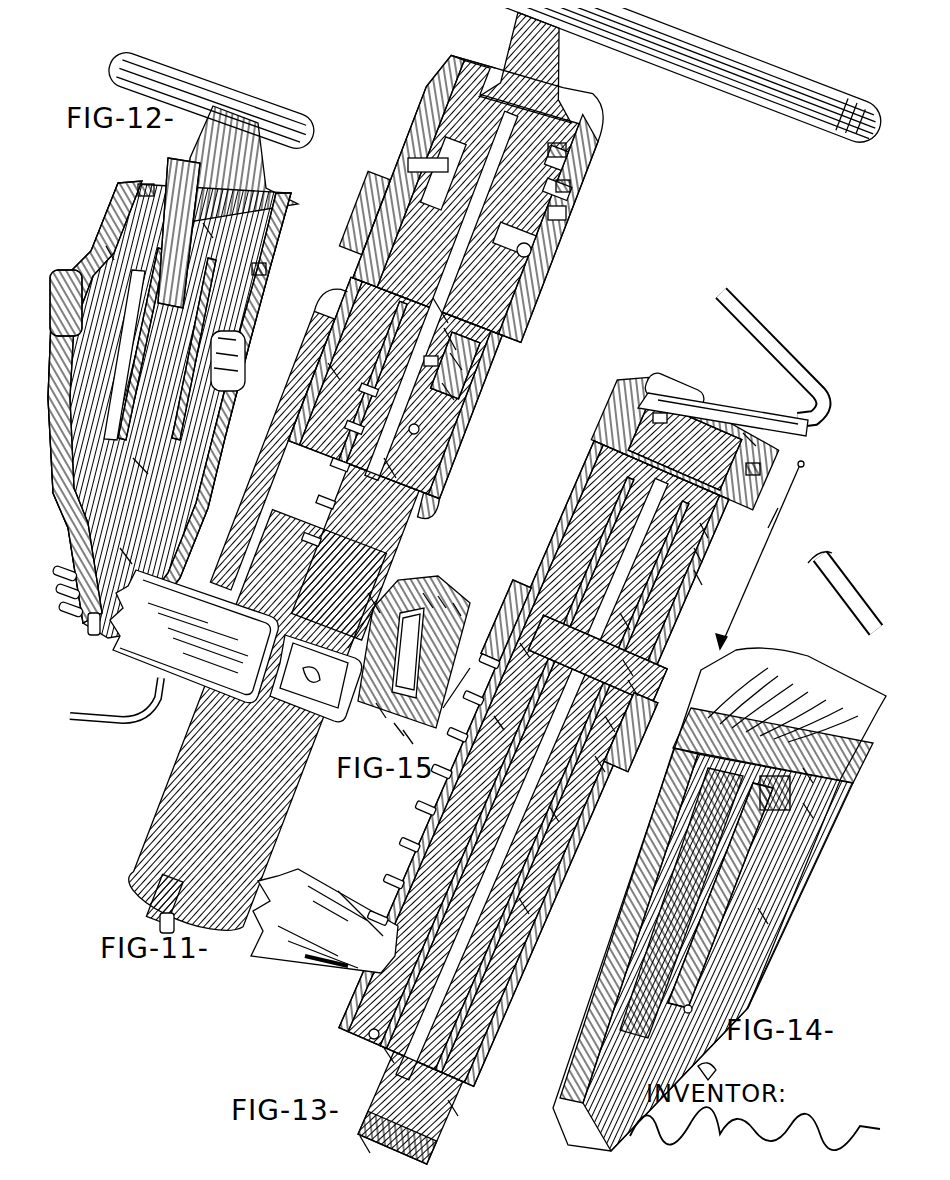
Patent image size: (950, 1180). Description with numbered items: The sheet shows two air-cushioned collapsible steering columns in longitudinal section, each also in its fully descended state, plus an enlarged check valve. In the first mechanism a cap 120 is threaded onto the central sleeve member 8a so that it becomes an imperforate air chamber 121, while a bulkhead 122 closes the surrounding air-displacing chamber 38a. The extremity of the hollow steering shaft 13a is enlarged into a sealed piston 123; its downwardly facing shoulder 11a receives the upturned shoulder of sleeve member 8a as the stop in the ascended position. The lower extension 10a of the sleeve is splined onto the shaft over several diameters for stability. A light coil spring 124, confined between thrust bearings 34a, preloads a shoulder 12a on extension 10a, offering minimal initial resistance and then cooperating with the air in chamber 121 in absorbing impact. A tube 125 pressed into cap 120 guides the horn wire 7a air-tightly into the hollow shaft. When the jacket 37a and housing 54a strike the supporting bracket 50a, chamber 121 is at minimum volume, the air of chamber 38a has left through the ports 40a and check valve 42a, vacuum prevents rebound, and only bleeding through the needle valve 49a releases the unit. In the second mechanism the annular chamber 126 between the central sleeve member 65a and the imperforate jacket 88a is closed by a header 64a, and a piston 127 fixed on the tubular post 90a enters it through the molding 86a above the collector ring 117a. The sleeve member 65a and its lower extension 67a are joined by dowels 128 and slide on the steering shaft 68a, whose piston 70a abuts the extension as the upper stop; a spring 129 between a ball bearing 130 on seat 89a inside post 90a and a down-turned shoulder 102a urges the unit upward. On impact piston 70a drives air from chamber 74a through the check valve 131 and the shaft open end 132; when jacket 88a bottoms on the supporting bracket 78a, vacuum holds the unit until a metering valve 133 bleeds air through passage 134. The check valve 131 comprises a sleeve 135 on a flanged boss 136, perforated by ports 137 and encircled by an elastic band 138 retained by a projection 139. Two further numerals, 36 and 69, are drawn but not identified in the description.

In FIG. 11, the horn wire 7a is at (152, 915).
In FIG. 11, the central sleeve member 8a is at (442, 330).
In FIG. 11, the lower portion or extension of the sleeve member 10a is at (381, 459).
In FIG. 11, the downwardly facing shoulder 11a is at (440, 382).
In FIG. 11, the shoulder on the sleeve extension 12a is at (326, 364).
In FIG. 11, the steering shaft 13a is at (367, 596).
In FIG. 11, the thrust bearings 34a is at (406, 421).
In FIG. 11, the handle 36 is at (300, 212).
In FIG. 12, the jacket 37a is at (132, 458).
In FIG. 12, the air-displacing chamber 38a is at (138, 183).
In FIG. 11, the air-displacing chamber 38a is at (448, 352).
In FIG. 11, the ports 40a is at (440, 158).
In FIG. 12, the check valve 42a is at (100, 242).
In FIG. 12, the needle valve 49a is at (252, 262).
In FIG. 11, the needle valve 49a is at (560, 178).
In FIG. 12, the supporting bracket 50a is at (84, 622).
In FIG. 12, the housing 54a is at (118, 548).
In FIG. 13, the header 64a is at (652, 410).
In FIG. 13, the central sleeve member 65a is at (690, 546).
In FIG. 13, the lower extension of the sleeve member 67a is at (546, 806).
In FIG. 13, the steering shaft 68a is at (516, 899).
In FIG. 13, the dimension 69 is at (774, 511).
In FIG. 13, the piston 70a is at (620, 660).
In FIG. 13, the chamber 74a is at (617, 614).
In FIG. 14, the chamber 74a is at (800, 802).
In FIG. 14, the supporting bracket 78a is at (702, 1062).
In FIG. 13, the molding 86a is at (592, 756).
In FIG. 13, the imperforate jacket 88a is at (690, 568).
In FIG. 14, the imperforate jacket 88a is at (755, 909).
In FIG. 13, the seat 89a is at (376, 1046).
In FIG. 13, the tubular post 90a is at (446, 1100).
In FIG. 13, the down-turned shoulder 102a is at (490, 713).
In FIG. 13, the collector ring 117a is at (602, 716).
In FIG. 11, the cap 120 is at (556, 143).
In FIG. 12, the imperforate air chamber 121 is at (200, 222).
In FIG. 11, the imperforate air chamber 121 is at (432, 302).
In FIG. 11, the bulkhead 122 is at (556, 205).
In FIG. 11, the piston 123 is at (424, 354).
In FIG. 11, the coil spring 124 is at (386, 466).
In FIG. 11, the tube 125 is at (516, 242).
In FIG. 13, the annular chamber 126 is at (696, 522).
In FIG. 14, the annular chamber 126 is at (800, 768).
In FIG. 13, the piston 127 is at (625, 679).
In FIG. 13, the dowels 128 is at (515, 640).
In FIG. 13, the spring 129 is at (521, 871).
In FIG. 14, the spring 129 is at (680, 1001).
In FIG. 13, the ball bearing 130 is at (362, 1026).
In FIG. 15, the check valve 131 is at (425, 590).
In FIG. 14, the check valve 131 is at (770, 792).
In FIG. 13, the shaft open end 132 is at (352, 1136).
In FIG. 13, the metering valve 133 is at (745, 462).
In FIG. 13, the passage 134 is at (742, 431).
In FIG. 15, the sleeve 135 is at (390, 722).
In FIG. 15, the flanged boss 136 is at (436, 590).
In FIG. 15, the ports 137 is at (450, 598).
In FIG. 15, the band of elastic material 138 is at (398, 727).
In FIG. 15, the projection 139 is at (372, 702).